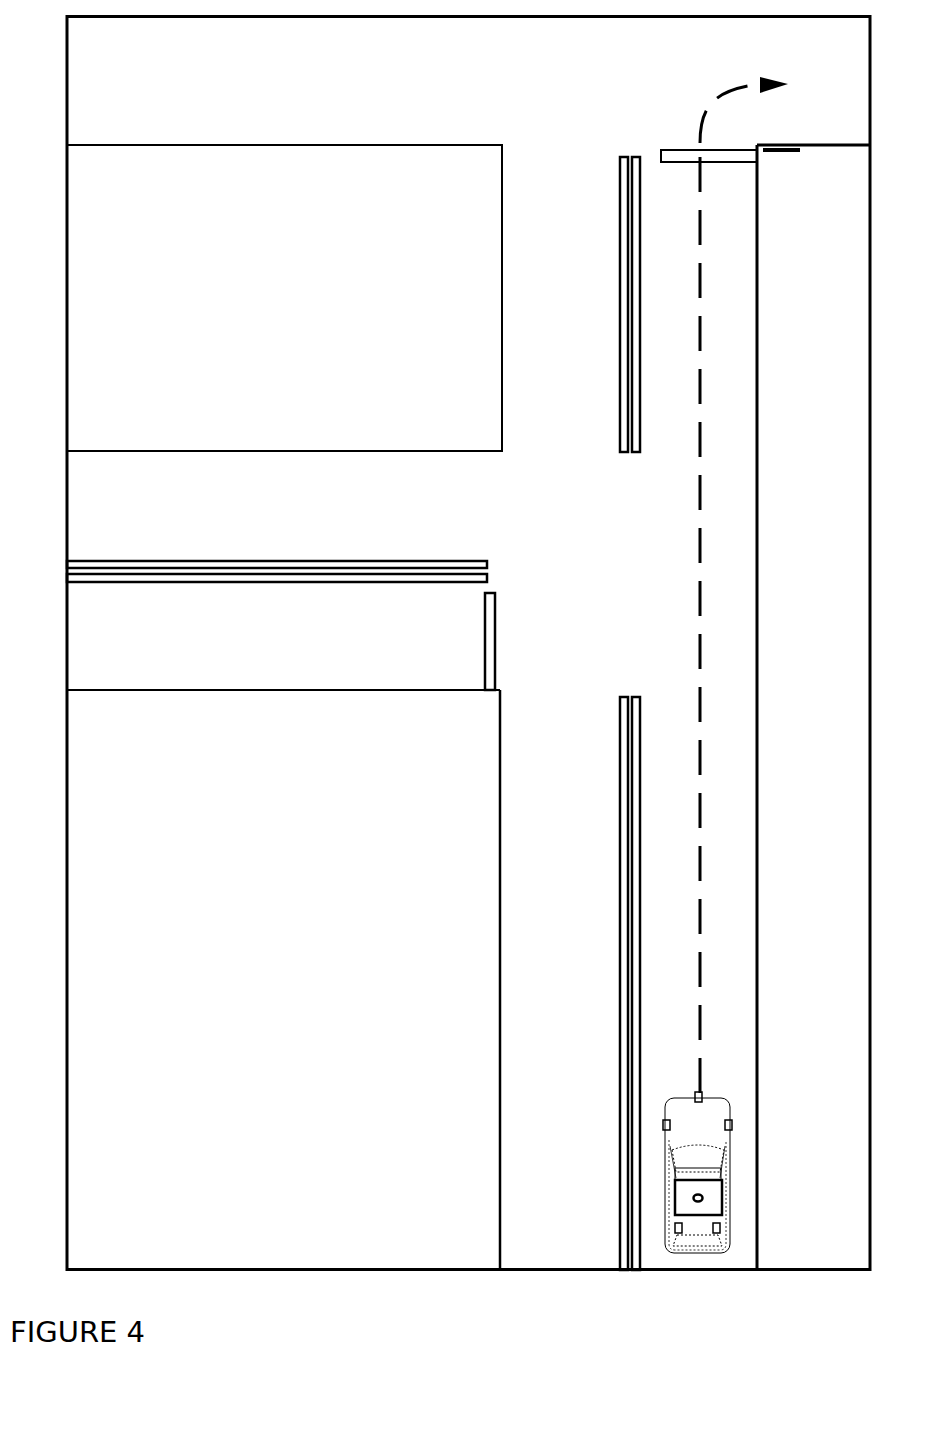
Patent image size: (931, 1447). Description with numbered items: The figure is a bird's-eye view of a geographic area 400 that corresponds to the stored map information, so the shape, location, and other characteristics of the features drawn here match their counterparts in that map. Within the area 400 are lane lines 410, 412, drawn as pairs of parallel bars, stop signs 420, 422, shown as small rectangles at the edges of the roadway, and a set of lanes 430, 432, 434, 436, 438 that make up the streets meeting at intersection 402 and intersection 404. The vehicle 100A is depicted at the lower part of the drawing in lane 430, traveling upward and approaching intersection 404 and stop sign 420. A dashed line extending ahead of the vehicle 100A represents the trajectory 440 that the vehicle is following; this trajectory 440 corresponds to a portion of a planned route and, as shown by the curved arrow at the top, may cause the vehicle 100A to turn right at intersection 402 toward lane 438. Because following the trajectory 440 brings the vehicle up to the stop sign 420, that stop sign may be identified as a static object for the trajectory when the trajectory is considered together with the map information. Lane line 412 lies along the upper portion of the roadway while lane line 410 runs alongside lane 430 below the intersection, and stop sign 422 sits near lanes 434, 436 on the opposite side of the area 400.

The geographic area 400 is at (93, 1307).
The intersection 402 is at (638, 93).
The intersection 404 is at (645, 573).
The lane line 410 is at (640, 1257).
The lane line 412 is at (620, 274).
The stop sign 420 is at (780, 152).
The stop sign 422 is at (477, 705).
The lane 430 is at (690, 858).
The lane 432 is at (583, 753).
The lane 434 is at (133, 638).
The lane 436 is at (133, 510).
The lane 438 is at (142, 77).
The trajectory 440 is at (700, 655).
The vehicle 100A is at (728, 1197).